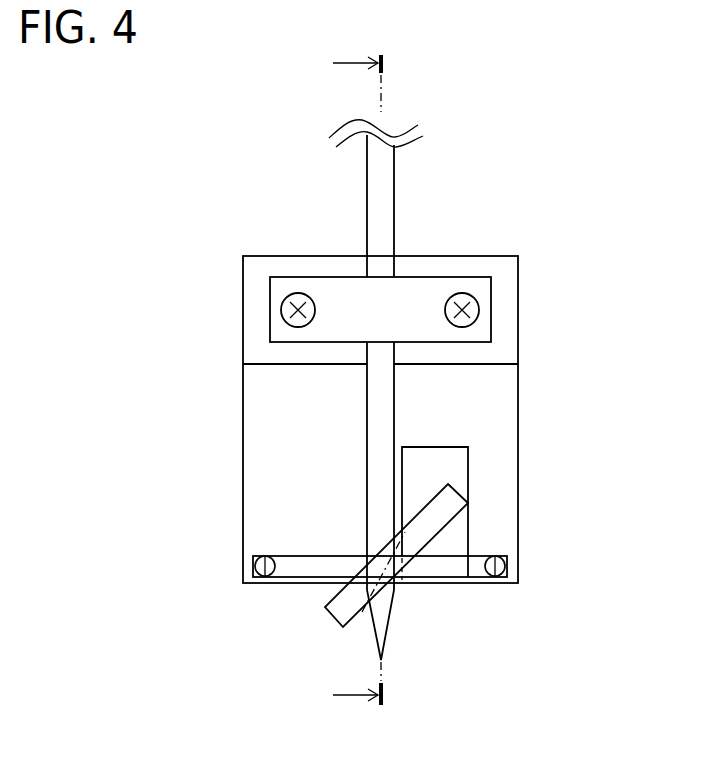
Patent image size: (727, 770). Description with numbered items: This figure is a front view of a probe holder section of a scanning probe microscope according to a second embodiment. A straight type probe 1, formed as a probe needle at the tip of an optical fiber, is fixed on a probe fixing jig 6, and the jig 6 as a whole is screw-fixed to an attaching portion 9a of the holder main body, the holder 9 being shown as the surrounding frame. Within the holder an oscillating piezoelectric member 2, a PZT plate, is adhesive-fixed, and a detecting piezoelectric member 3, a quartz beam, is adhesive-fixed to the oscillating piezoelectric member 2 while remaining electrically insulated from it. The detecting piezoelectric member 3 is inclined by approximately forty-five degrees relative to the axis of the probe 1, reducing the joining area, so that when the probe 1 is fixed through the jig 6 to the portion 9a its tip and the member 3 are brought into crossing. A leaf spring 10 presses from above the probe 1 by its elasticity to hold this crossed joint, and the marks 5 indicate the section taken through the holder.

The probe 1 is at (382, 420).
The oscillating piezoelectric member 2 is at (438, 463).
The detecting piezoelectric member 3 is at (423, 525).
The section line 5 is at (362, 379).
The probe fixing jig 6 is at (417, 297).
The housing 9 is at (270, 432).
The attaching portion 9a is at (260, 295).
The leaf spring 10 is at (322, 565).